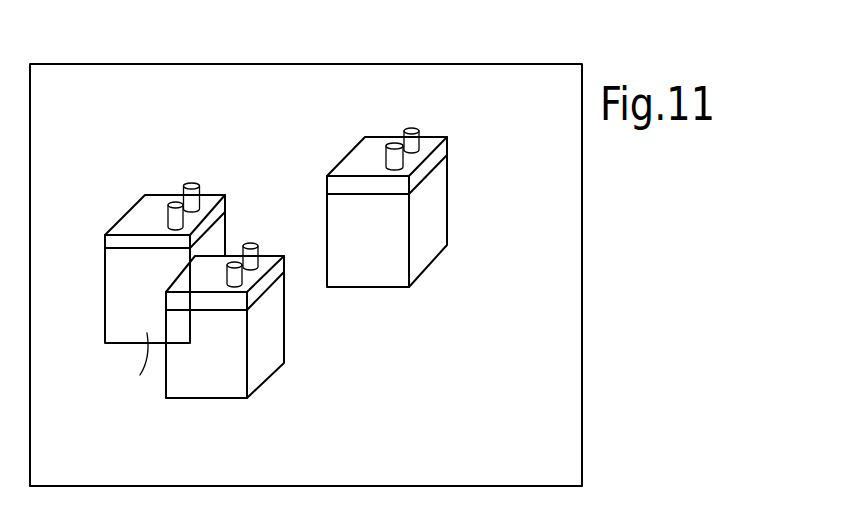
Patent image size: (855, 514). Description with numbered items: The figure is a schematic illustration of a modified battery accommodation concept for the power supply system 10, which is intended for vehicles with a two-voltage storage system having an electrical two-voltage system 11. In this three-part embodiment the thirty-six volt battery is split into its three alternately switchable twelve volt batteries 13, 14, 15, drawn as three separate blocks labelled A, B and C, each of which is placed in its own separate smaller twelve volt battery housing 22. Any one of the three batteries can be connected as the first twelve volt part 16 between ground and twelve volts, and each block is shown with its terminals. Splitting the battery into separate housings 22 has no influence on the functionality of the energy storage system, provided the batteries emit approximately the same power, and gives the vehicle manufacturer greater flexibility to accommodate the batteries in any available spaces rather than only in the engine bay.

The power supply system 10 is at (124, 50).
The electrical two-voltage system 11 is at (285, 243).
The first 12 volt battery 13 is at (113, 283).
The second 12 volt battery 14 is at (203, 388).
The third 12 volt battery 15 is at (393, 280).
The first 12 volt part 16 is at (193, 198).
The battery housing 22 is at (180, 352).